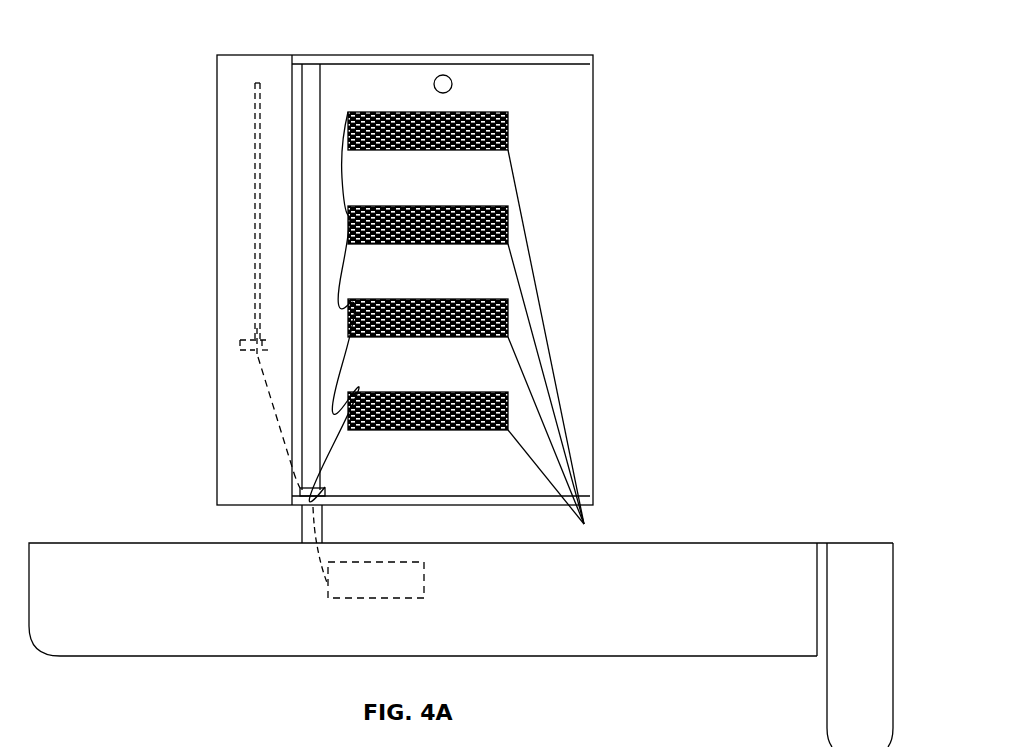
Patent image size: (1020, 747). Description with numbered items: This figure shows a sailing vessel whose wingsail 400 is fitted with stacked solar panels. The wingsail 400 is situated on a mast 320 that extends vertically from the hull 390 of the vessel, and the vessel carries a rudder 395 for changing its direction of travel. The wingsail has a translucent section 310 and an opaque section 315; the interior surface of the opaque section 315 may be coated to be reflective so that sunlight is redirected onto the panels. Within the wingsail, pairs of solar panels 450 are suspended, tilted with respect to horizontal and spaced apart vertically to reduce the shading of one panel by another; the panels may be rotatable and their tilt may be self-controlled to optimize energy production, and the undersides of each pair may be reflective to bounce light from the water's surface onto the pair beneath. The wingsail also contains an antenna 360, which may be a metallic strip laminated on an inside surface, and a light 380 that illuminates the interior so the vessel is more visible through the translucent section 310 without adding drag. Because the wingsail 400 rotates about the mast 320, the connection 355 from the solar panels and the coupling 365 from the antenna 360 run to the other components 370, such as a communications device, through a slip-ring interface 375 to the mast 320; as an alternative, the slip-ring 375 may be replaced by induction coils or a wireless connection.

The translucent section 310 is at (530, 108).
The opaque section 315 is at (247, 75).
The mast 320 is at (312, 93).
The connection 355 is at (330, 452).
The antenna 360 is at (255, 195).
The coupling 365 is at (275, 422).
The components 370 is at (367, 580).
The slip-ring interface 375 is at (303, 492).
The light 380 is at (434, 80).
The hull 390 is at (142, 655).
The rudder 395 is at (857, 655).
The wingsail 400 is at (487, 55).
The solar panel pairs 450 is at (491, 324).